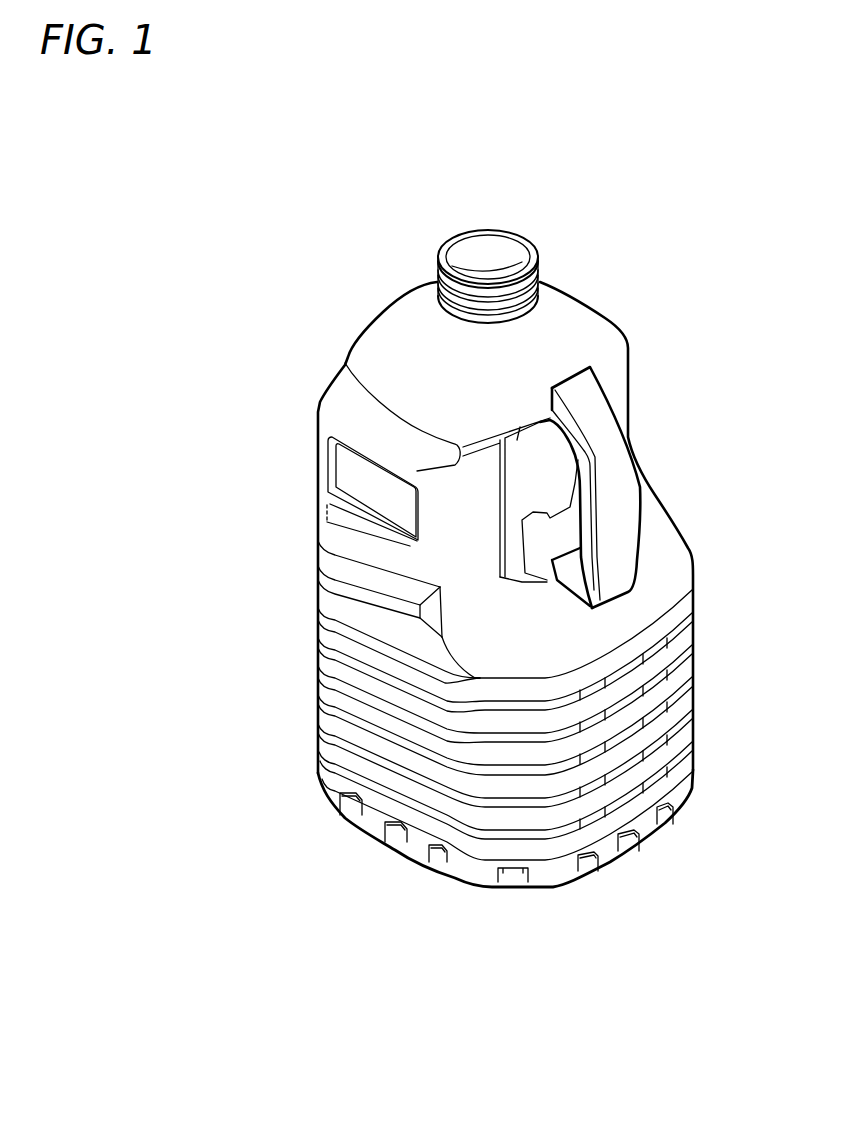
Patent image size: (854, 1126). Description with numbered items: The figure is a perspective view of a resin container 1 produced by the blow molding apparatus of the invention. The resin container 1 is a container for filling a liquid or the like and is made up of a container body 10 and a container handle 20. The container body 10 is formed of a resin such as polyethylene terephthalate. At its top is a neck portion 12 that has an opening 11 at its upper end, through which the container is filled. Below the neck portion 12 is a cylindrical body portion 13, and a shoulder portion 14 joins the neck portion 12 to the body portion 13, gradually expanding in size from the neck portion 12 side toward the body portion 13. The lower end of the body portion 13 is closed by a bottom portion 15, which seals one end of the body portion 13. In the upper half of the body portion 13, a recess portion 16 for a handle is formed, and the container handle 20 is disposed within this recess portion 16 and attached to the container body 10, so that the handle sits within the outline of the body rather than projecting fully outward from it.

The resin container 1 is at (704, 143).
The container body 10 is at (280, 448).
The opening 11 is at (483, 252).
The neck portion 12 is at (437, 275).
The body portion 13 is at (326, 628).
The shoulder portion 14 is at (588, 326).
The bottom portion 15 is at (426, 868).
The recess portion 16 is at (623, 410).
The container handle 20 is at (613, 503).